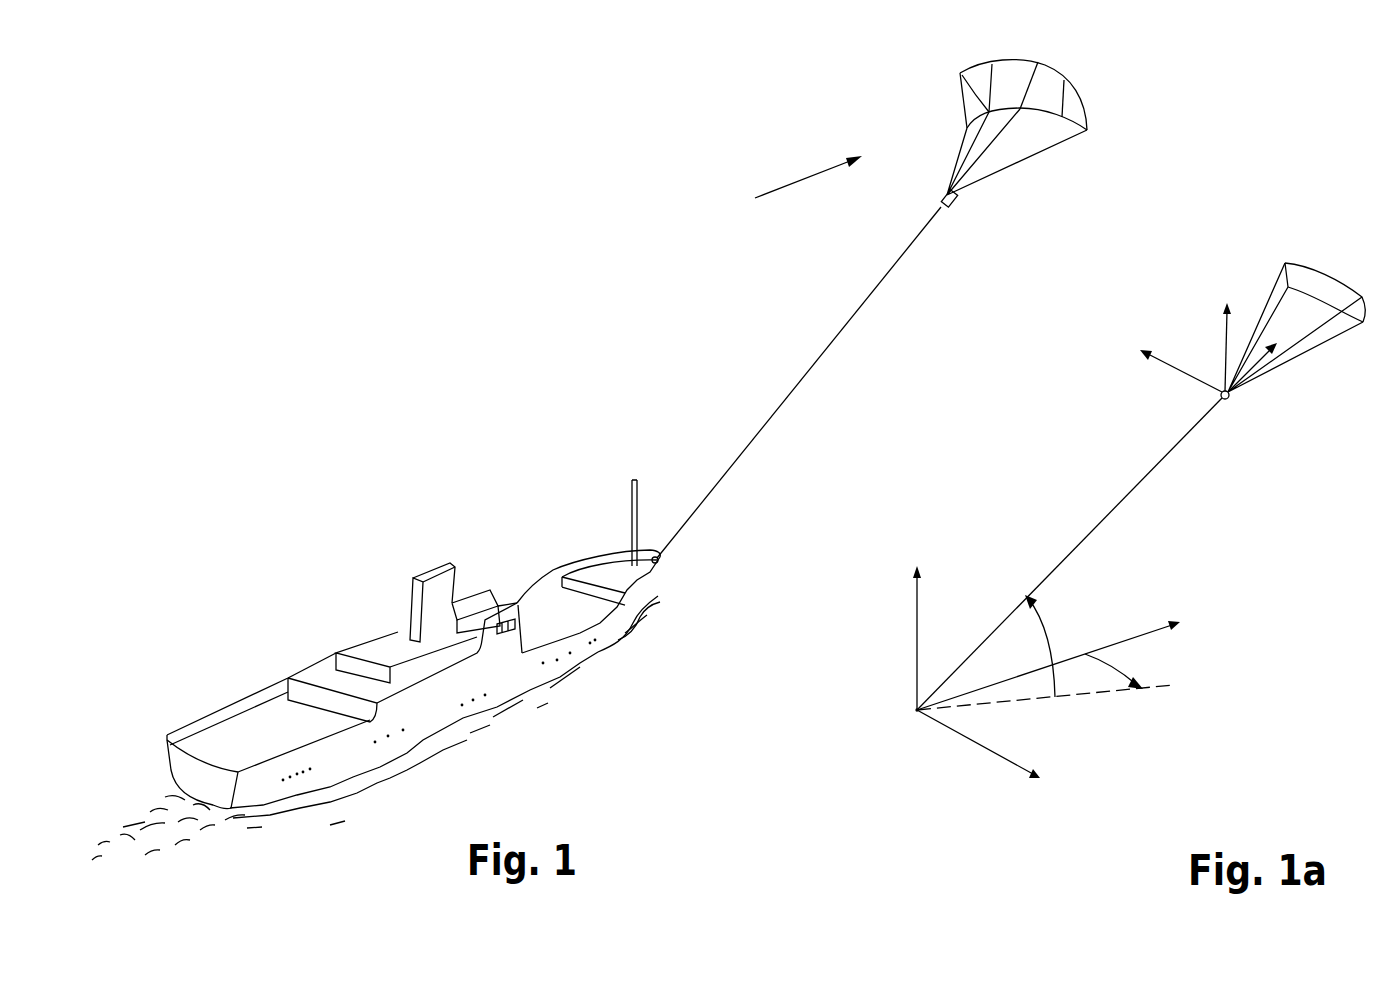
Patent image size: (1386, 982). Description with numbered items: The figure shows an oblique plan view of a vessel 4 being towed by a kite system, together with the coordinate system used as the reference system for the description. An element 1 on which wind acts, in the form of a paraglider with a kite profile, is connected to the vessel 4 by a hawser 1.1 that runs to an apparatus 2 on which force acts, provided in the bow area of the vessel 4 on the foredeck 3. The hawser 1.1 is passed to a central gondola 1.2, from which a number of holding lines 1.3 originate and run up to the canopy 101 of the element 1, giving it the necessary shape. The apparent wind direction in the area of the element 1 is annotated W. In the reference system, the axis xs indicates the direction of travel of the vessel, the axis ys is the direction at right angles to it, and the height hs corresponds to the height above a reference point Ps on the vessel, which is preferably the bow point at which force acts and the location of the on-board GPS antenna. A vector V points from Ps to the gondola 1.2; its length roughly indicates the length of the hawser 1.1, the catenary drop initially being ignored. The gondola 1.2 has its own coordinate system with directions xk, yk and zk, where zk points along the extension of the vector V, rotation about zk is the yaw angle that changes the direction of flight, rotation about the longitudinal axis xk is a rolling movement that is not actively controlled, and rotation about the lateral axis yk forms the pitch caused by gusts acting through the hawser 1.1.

In FIG. 1, the element on which wind acts 1 is at (1005, 148).
In FIG. 1, the hawser 1.1 is at (823, 350).
In FIG. 1, the central gondola 1.2 is at (933, 193).
In FIG. 1, the holding lines 1.3 is at (1046, 126).
In FIG. 1, the kite canopy (aerodynamic wing) 101 is at (1083, 96).
In FIG. 1, the apparatus on which force acts 2 is at (654, 554).
In FIG. 1, the foredeck platform 3 is at (608, 573).
In FIG. 1, the vessel 4 is at (512, 677).
In FIG. 1, the apparent wind direction W is at (798, 181).
In FIG. 1A, the vector V is at (1118, 498).
In FIG. 1A, the reference point Ps is at (915, 710).
In FIG. 1A, the height axis hs is at (918, 620).
In FIG. 1A, the direction of travel axis xs is at (1063, 658).
In FIG. 1A, the transverse axis ys is at (993, 755).
In FIG. 1A, the gondola longitudinal axis xk is at (1163, 357).
In FIG. 1A, the gondola lateral axis yk is at (1229, 328).
In FIG. 1A, the gondola vertical axis zk is at (1263, 351).